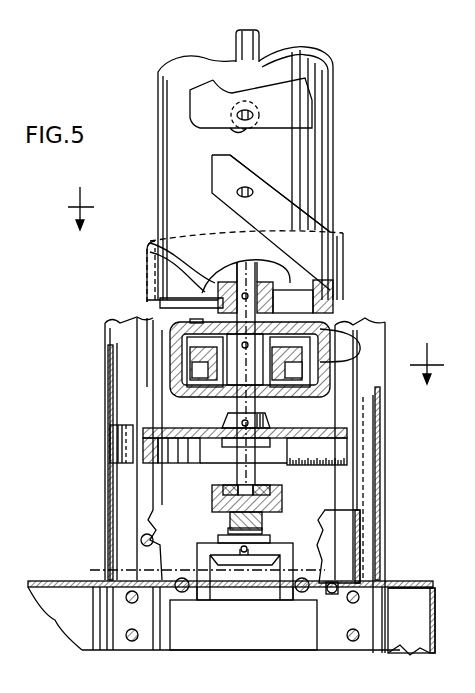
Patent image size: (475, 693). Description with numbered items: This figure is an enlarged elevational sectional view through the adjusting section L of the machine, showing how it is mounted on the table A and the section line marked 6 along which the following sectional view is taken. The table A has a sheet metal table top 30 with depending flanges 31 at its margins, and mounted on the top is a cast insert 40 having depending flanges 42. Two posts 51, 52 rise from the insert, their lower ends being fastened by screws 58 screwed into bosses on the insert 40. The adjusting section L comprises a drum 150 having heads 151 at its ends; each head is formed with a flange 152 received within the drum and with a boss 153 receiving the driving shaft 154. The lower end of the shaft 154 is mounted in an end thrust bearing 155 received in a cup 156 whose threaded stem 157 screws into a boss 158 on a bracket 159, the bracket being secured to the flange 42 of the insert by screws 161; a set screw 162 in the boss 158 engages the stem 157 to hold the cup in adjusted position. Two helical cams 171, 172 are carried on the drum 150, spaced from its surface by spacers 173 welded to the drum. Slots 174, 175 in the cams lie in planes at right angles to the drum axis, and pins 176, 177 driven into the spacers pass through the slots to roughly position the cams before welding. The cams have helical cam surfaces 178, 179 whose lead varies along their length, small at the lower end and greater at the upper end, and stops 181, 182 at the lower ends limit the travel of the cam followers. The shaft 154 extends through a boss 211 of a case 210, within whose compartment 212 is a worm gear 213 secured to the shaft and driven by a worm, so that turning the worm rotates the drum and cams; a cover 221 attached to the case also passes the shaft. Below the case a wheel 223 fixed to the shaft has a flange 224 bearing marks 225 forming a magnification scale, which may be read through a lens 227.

The drum 150 is at (225, 175).
The driving shaft 154 is at (247, 50).
The cam surface 179 is at (282, 80).
The adjusting section L is at (160, 72).
The helical cam 172 is at (300, 104).
The stop 182 is at (205, 97).
The spacer 173 is at (233, 126).
The pin 177 is at (245, 110).
The slot 175 is at (255, 117).
The helical cam 171 is at (303, 218).
The cam surface 178 is at (277, 195).
The pin 176 is at (246, 187).
The slot 174 is at (237, 192).
The head 151 is at (332, 262).
The boss 153 is at (227, 292).
The stop 181 is at (272, 270).
The flange 152 is at (336, 284).
The cover 221 is at (308, 326).
The case 210 is at (213, 390).
The boss 211 is at (273, 380).
The compartment 212 is at (197, 379).
The worm gear 213 is at (338, 357).
The post 51 is at (128, 350).
The post 52 is at (358, 342).
The wheel 223 is at (340, 436).
The flange 224 is at (148, 448).
The lens 227 is at (120, 434).
The marks 225 is at (312, 462).
The cup 156 is at (216, 498).
The end thrust bearing 155 is at (266, 503).
The threaded stem 157 is at (230, 530).
The boss 158 is at (268, 543).
The bracket 159 is at (277, 552).
The set screw 162 is at (243, 553).
The insert 40 is at (82, 578).
The screw 161 is at (182, 595).
The flange 42 is at (267, 643).
The screw 58 is at (127, 632).
The flange 31 is at (437, 622).
The table top 30 is at (400, 586).
The table A is at (436, 588).
The section line 6 is at (256, 297).